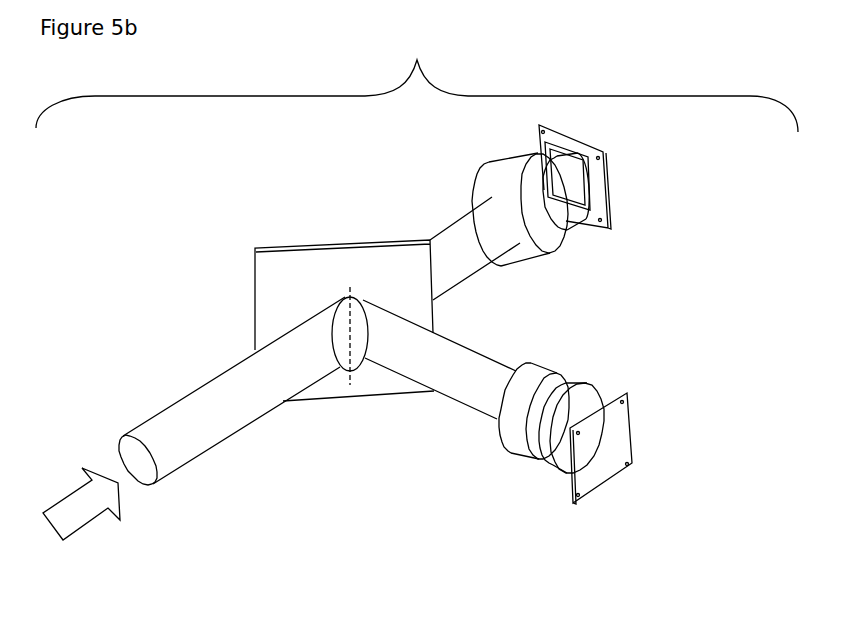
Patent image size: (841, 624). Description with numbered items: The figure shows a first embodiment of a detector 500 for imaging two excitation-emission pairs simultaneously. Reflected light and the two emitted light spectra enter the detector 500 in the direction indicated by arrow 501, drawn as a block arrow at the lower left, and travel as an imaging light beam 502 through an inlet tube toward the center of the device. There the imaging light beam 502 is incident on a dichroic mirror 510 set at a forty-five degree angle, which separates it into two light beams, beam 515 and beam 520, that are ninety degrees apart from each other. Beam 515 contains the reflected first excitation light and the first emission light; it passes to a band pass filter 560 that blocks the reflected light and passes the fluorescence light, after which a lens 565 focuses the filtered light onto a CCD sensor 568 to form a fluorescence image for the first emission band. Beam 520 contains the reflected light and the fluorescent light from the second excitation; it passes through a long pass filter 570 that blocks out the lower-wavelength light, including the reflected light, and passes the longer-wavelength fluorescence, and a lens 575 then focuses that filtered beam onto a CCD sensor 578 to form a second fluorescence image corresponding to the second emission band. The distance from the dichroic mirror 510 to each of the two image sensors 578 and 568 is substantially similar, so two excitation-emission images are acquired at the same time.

The detector 500 is at (417, 82).
The arrow 501 is at (97, 521).
The imaging light beam 502 is at (175, 446).
The dichroic mirror 510 is at (344, 248).
The beam 515 is at (434, 329).
The light beam 520 is at (452, 239).
The band pass filter 560 is at (491, 440).
The lens 565 is at (536, 466).
The CCD sensor 568 is at (627, 425).
The long pass filter 570 is at (545, 257).
The lens 575 is at (578, 231).
The CCD sensor 578 is at (598, 144).